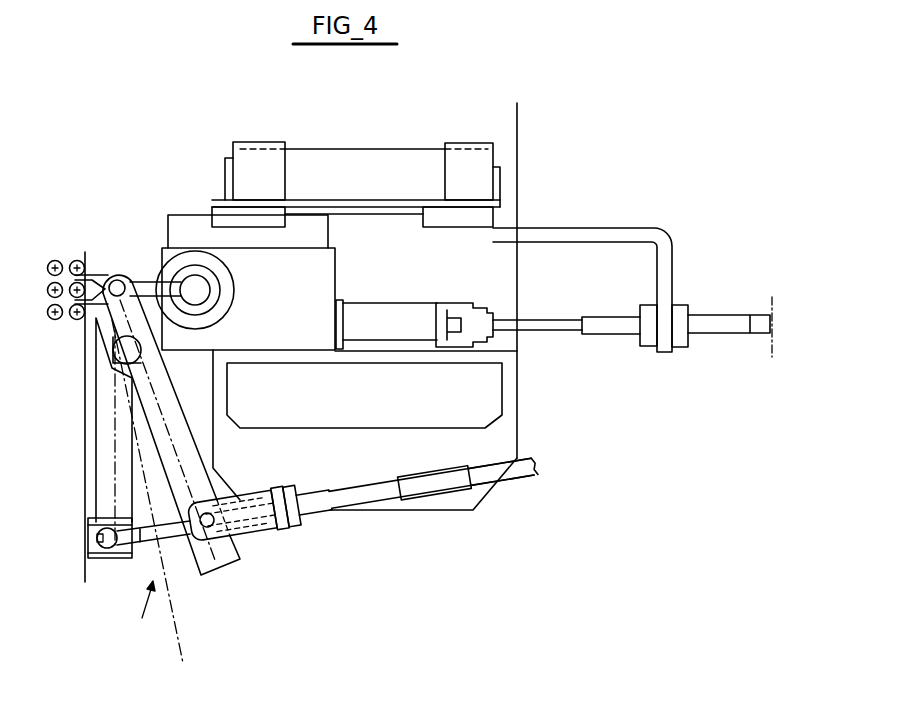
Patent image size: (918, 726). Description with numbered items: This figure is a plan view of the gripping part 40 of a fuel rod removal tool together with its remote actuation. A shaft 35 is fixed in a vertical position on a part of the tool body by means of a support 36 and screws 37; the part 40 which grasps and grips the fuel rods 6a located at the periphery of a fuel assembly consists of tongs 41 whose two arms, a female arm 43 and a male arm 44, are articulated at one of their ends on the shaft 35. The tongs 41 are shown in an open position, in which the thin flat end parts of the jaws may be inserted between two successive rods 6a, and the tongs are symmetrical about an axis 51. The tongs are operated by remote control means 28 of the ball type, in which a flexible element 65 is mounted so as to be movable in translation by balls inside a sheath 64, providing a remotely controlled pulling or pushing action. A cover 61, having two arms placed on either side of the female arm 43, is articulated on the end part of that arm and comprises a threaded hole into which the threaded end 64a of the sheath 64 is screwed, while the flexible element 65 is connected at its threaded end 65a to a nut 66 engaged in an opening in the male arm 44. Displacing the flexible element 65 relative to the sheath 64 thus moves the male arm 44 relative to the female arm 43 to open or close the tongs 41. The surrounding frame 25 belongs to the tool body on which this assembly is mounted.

The fuel rods 6a is at (74, 261).
The housing frame 25 is at (337, 160).
The remote control means 28 is at (524, 482).
The shaft 35 is at (110, 277).
The support 36 is at (126, 279).
The screw 37 is at (152, 282).
The part of the removal tool 40 is at (82, 382).
The tongs 41 is at (139, 616).
The female arm 43 is at (188, 462).
The male arm 44 is at (114, 450).
The axis of symmetry 51 is at (178, 643).
The cover 61 is at (267, 530).
The sheath 64 is at (422, 487).
The threaded end of sheath 64a is at (310, 500).
The flexible element 65 is at (157, 540).
The threaded end of flexible element 65a is at (123, 560).
The nut 66 is at (88, 527).